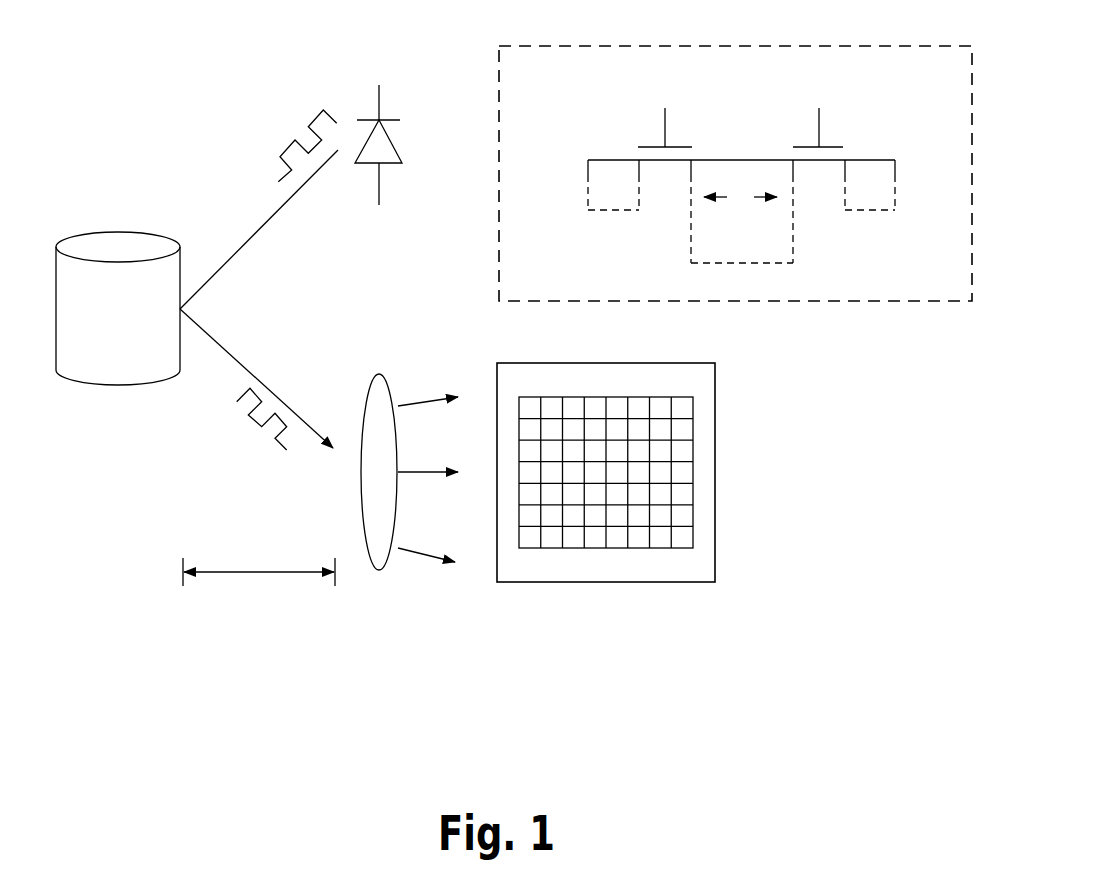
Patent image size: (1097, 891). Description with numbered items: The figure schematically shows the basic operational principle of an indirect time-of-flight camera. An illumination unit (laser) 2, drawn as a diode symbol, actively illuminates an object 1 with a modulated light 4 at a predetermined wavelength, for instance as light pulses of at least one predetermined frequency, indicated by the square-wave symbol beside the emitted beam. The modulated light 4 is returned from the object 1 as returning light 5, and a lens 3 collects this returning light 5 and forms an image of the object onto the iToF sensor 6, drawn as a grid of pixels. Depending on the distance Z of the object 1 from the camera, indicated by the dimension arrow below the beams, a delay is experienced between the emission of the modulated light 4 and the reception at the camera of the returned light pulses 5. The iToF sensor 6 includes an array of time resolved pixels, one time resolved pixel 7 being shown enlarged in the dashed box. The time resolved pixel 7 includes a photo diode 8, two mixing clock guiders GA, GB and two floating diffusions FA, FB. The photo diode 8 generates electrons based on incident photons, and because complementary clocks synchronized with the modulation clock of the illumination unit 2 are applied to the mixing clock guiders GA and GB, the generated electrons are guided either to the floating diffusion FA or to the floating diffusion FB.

The object 1 is at (118, 308).
The illumination unit (laser) 2 is at (414, 145).
The lens 3 is at (404, 459).
The modulated light 4 is at (259, 175).
The returning light 5 is at (256, 399).
The iToF sensor 6 is at (606, 487).
The time resolved pixel 7 is at (607, 468).
The photo diode 8 is at (742, 211).
The mixing clock guider GA is at (615, 116).
The mixing clock guider GB is at (871, 116).
The floating diffusion FA is at (600, 214).
The floating diffusion FB is at (883, 214).
The distance Z is at (259, 586).